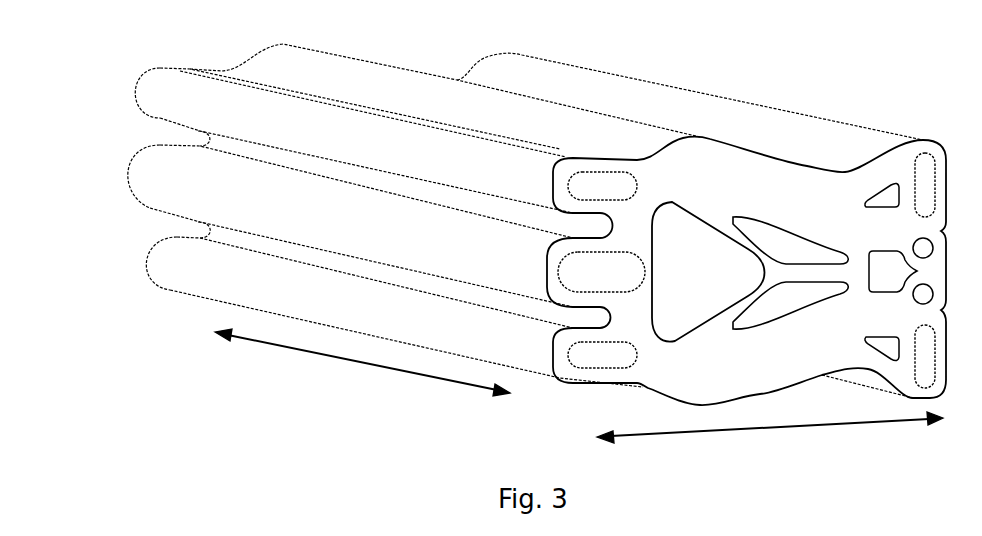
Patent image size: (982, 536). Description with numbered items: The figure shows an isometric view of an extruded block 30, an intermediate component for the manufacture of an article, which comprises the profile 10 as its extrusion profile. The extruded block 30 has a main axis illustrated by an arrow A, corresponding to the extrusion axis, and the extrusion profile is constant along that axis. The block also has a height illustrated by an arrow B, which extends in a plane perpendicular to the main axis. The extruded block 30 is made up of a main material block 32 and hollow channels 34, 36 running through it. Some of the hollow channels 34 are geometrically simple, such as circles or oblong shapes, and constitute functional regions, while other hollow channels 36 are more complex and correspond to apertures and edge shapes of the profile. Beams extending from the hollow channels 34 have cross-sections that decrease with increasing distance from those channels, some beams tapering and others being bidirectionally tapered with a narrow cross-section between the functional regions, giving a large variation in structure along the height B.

The profile 10 is at (703, 158).
The extruded block 30 is at (110, 80).
The main material block 32 is at (783, 197).
The hollow channels 34 is at (603, 175).
The hollow channels 36 is at (703, 260).
The arrow A is at (383, 365).
The arrow B is at (860, 423).